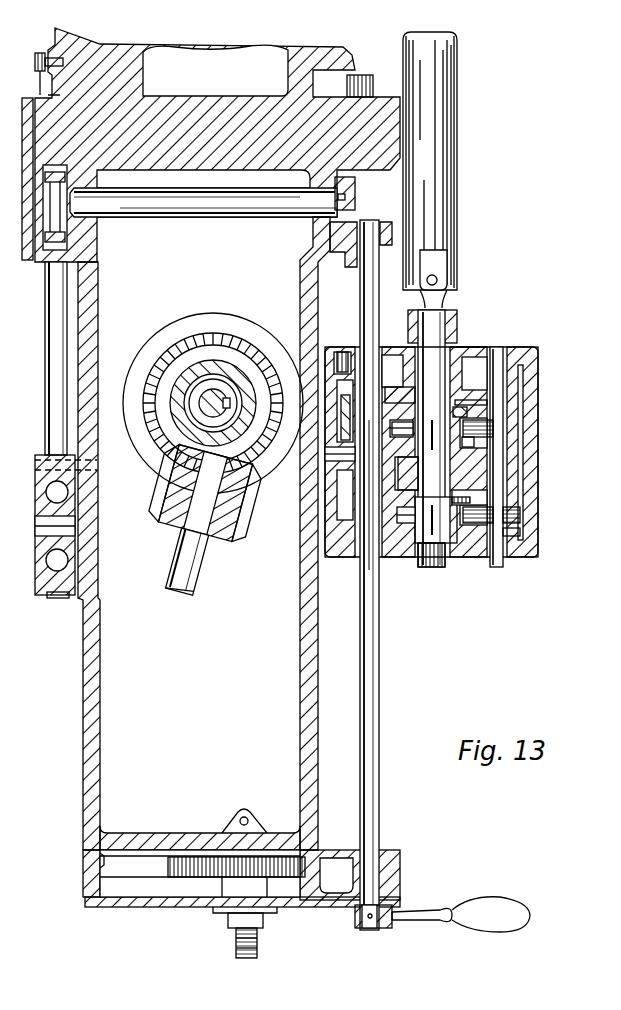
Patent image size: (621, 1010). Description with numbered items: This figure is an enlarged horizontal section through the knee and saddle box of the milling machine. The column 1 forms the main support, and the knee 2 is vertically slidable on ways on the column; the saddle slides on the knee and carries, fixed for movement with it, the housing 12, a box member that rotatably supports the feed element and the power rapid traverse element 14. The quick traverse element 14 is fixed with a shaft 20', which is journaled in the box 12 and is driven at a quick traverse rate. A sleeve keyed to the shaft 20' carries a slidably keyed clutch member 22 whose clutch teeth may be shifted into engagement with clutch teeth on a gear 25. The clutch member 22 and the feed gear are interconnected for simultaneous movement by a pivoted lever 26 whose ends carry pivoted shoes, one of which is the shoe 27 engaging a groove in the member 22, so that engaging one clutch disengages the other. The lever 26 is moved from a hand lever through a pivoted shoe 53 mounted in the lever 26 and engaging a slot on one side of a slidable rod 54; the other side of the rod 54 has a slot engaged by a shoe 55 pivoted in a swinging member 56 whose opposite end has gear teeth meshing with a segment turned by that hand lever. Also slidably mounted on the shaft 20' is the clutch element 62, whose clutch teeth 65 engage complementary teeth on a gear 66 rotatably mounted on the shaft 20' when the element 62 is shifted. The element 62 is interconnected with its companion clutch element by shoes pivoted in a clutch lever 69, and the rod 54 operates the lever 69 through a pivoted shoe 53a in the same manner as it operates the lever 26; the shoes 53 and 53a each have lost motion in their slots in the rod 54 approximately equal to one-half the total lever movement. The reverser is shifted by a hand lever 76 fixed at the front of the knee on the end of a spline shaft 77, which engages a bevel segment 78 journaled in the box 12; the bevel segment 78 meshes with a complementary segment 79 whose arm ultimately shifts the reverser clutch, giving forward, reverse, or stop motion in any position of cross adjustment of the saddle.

The column 1 is at (145, 47).
The knee 2 is at (83, 662).
The housing 12 is at (505, 555).
The power rapid traverse element 14 is at (448, 296).
The shaft 20' is at (451, 438).
The clutch member 22 is at (469, 413).
The gear 25 is at (398, 392).
The lever 26 is at (490, 440).
The pivoted shoe 27 is at (473, 448).
The pivoted shoe 53 is at (494, 428).
The pivoted shoe 53a is at (510, 545).
The slidable rod 54 is at (505, 388).
The shoe 55 is at (520, 513).
The swinging member 56 is at (521, 518).
The clutch element 62 is at (410, 532).
The clutch teeth 65 is at (472, 500).
The gear 66 is at (408, 440).
The clutch lever 69 is at (470, 556).
The hand lever 76 is at (482, 905).
The spline shaft 77 is at (380, 684).
The bevel segment 78 is at (340, 466).
The complementary segment 79 is at (337, 488).